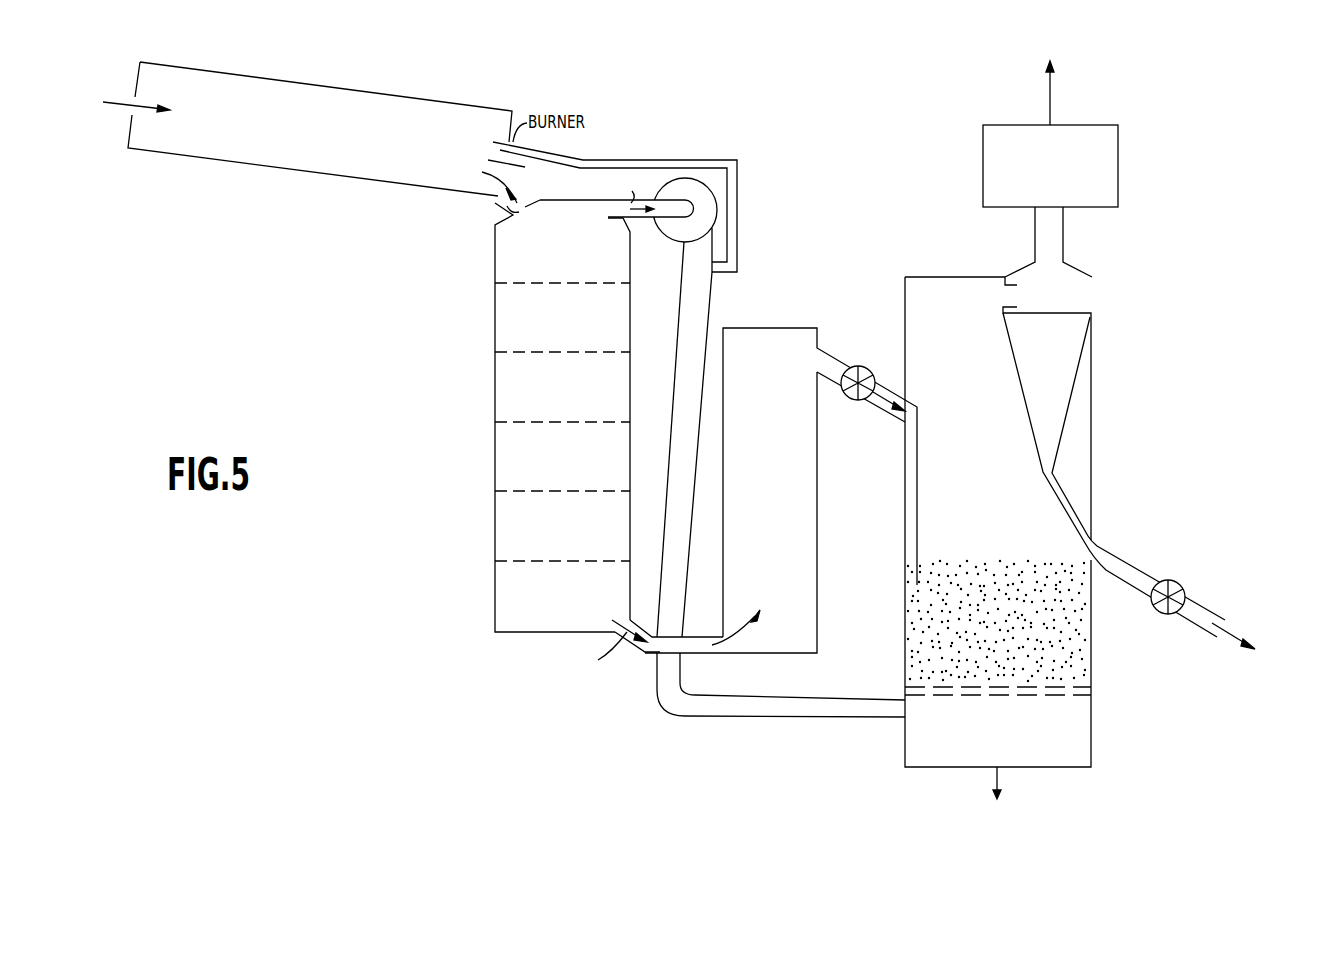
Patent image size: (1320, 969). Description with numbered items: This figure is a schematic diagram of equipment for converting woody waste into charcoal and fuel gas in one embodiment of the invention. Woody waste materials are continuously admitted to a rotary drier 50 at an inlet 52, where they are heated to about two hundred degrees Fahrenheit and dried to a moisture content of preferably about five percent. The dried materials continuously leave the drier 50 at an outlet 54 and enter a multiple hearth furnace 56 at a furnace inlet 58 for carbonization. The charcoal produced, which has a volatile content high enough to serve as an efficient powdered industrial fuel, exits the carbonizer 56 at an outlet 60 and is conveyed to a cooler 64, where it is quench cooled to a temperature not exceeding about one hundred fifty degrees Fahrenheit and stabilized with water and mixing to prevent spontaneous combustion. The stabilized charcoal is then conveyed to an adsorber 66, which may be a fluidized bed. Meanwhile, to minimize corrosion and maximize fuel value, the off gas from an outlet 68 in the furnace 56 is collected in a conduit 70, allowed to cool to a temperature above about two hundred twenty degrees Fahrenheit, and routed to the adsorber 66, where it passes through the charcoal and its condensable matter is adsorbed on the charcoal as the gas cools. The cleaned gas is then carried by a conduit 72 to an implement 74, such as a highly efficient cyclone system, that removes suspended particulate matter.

The rotary drier 50 is at (423, 97).
The inlet 52 is at (143, 98).
The outlet 54 is at (493, 185).
The multiple hearth furnace 56 is at (495, 333).
The furnace inlet 58 is at (519, 215).
The outlet 60 is at (620, 618).
The cooler 64 is at (818, 496).
The adsorber 66 is at (1093, 400).
The outlet 68 is at (607, 214).
The conduit 70 is at (668, 500).
The conduit 72 is at (1063, 239).
The implement for removing particulate matter 74 is at (1102, 175).